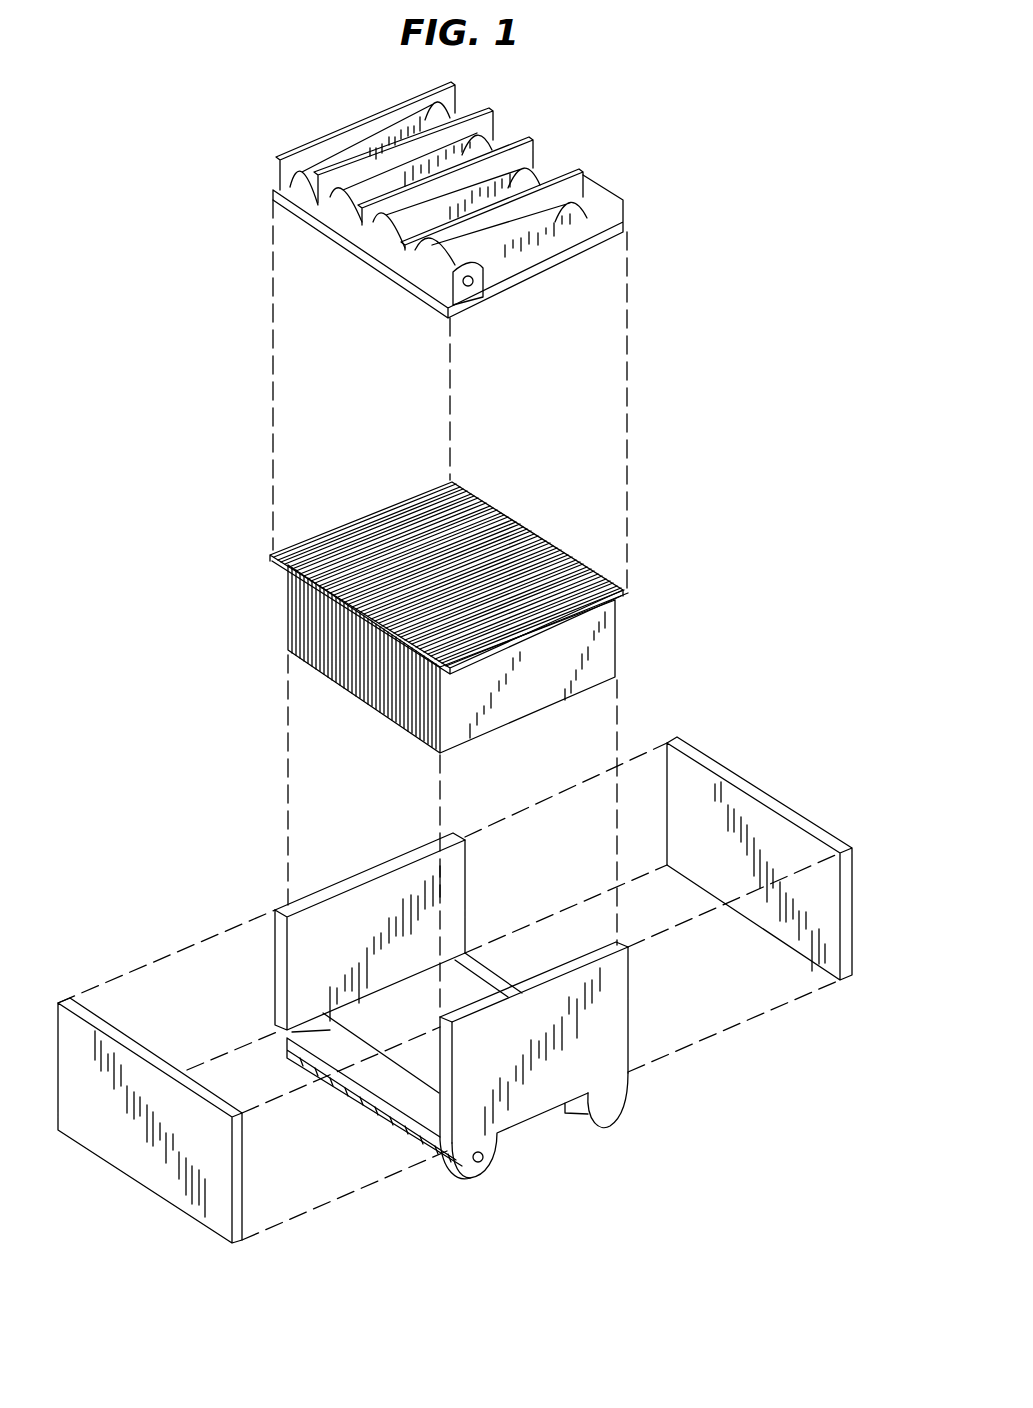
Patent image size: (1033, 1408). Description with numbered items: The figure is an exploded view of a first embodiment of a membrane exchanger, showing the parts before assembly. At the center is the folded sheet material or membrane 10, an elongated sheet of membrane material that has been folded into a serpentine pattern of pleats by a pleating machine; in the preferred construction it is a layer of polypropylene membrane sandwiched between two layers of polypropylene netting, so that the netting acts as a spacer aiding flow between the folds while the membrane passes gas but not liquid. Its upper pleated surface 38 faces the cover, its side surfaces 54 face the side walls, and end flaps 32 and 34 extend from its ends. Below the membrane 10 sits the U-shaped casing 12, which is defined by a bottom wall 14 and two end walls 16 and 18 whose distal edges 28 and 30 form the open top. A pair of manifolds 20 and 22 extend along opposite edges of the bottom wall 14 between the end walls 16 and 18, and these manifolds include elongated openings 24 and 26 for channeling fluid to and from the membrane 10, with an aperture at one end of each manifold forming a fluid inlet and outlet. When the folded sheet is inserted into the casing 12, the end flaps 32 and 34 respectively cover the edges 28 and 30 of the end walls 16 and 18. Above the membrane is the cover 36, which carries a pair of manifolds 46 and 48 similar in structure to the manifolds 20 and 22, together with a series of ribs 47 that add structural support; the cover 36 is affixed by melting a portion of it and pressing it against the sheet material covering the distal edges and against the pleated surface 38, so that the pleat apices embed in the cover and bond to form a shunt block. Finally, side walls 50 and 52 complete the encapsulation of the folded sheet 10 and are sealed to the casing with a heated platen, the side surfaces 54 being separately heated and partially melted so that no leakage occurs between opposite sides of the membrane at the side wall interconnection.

The membrane 10 is at (477, 606).
The U-shaped casing 12 is at (450, 1029).
The bottom wall 14 is at (403, 1018).
The end wall 16 is at (556, 1086).
The end wall 18 is at (396, 929).
The manifold 20 is at (470, 1180).
The manifold 22 is at (590, 1120).
The elongated opening 24 is at (288, 1040).
The elongated opening 26 is at (478, 982).
The distal edge 28 is at (607, 957).
The distal edge 30 is at (337, 887).
The end flap 32 is at (477, 606).
The end flap 34 is at (413, 500).
The cover 36 is at (580, 255).
The pleated surface 38 is at (487, 528).
The manifold 46 is at (350, 217).
The ribs 47 is at (583, 175).
The manifold 48 is at (455, 95).
The side wall 50 is at (183, 1183).
The side wall 52 is at (850, 910).
The side surfaces 54 is at (348, 673).